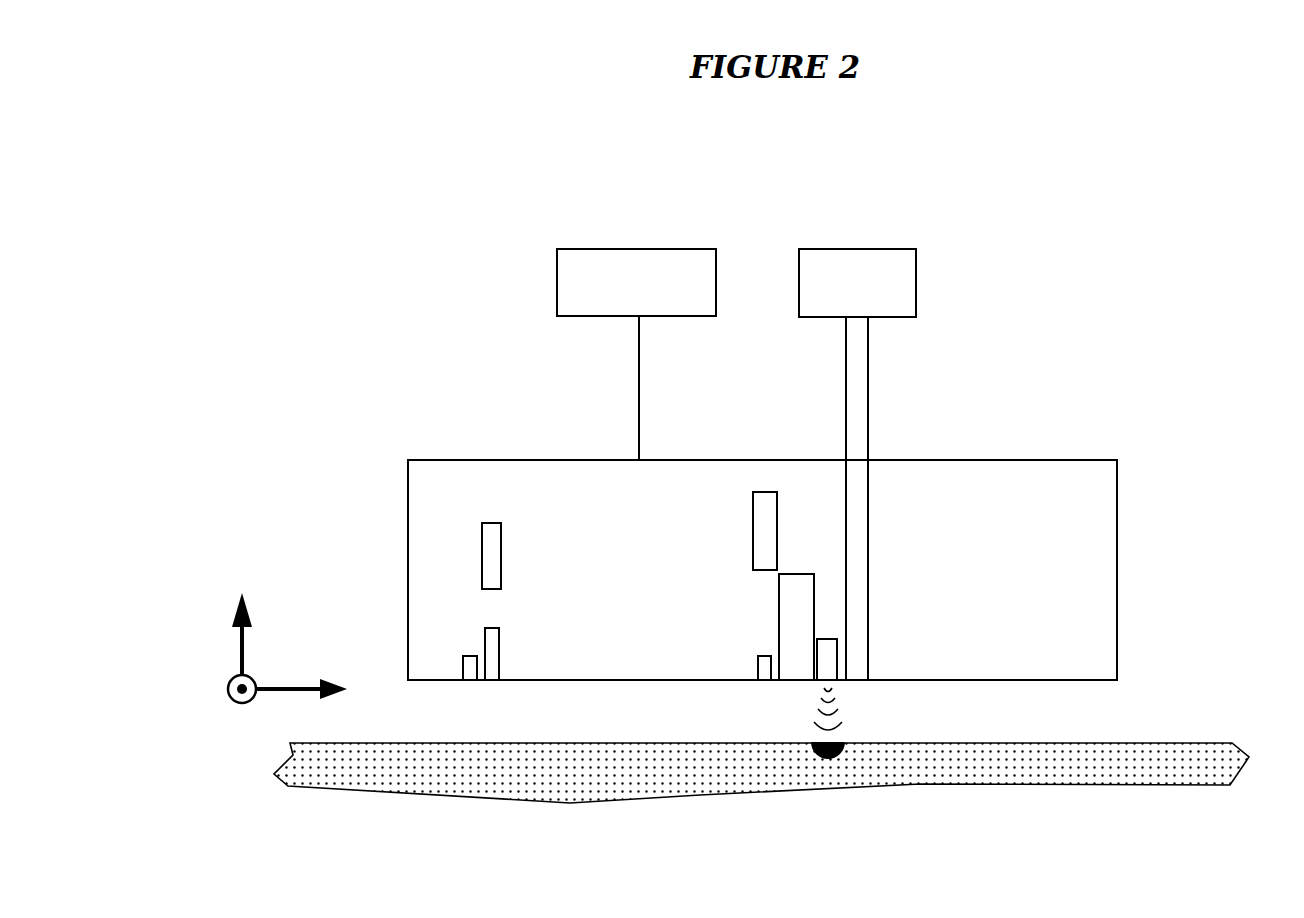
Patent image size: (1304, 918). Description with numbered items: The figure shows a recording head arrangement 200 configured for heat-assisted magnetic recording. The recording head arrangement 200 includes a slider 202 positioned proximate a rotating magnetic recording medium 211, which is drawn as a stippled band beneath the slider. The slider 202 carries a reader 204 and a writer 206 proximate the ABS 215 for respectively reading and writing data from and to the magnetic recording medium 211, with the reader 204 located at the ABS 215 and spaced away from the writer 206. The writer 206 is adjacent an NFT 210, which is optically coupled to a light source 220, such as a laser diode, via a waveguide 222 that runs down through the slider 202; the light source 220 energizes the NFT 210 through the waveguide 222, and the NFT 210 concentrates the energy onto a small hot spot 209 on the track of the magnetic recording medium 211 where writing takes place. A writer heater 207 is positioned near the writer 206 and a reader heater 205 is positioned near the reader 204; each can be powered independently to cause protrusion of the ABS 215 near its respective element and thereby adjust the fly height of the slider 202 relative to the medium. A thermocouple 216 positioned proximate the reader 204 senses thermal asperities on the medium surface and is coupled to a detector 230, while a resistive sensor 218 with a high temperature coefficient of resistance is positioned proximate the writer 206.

The recording head arrangement 200 is at (436, 148).
The slider 202 is at (1147, 434).
The reader 204 is at (499, 650).
The reader heater 205 is at (501, 558).
The writer 206 is at (779, 597).
The writer heater 207 is at (753, 538).
The hot spot 209 is at (820, 748).
The NFT 210 is at (825, 639).
The magnetic recording medium 211 is at (1178, 742).
The ABS 215 is at (976, 682).
The thermocouple 216 is at (470, 656).
The resistive sensor 218 is at (758, 665).
The light source 220 is at (916, 278).
The waveguide 222 is at (868, 395).
The detector 230 is at (557, 280).